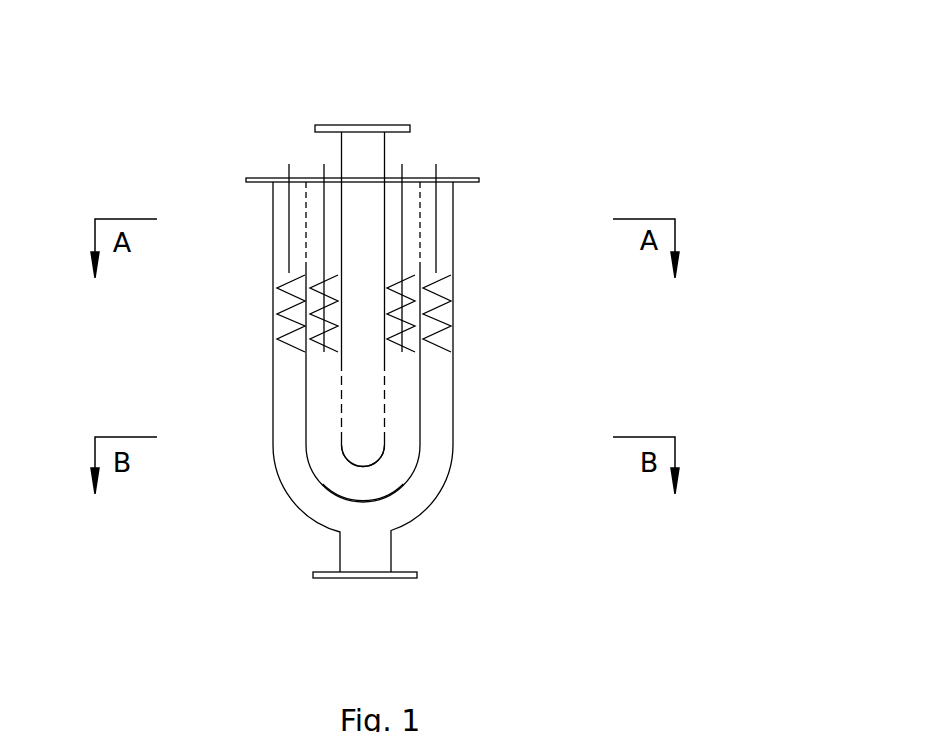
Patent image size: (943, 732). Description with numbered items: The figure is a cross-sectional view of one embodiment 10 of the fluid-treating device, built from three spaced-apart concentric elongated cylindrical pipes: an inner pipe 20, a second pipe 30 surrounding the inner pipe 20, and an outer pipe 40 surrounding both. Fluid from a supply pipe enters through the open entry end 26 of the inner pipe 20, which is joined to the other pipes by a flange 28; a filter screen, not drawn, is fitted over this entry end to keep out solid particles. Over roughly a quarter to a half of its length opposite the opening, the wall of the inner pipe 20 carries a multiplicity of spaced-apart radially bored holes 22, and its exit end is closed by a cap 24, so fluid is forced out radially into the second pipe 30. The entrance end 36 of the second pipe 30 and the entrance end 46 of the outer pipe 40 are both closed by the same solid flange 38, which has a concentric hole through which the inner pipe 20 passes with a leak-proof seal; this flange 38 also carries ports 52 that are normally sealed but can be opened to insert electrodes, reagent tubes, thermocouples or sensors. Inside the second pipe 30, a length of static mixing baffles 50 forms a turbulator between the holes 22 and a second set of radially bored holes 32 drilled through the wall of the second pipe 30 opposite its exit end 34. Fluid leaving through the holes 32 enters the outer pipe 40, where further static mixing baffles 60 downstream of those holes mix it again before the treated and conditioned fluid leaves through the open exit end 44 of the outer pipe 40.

The embodiment 10 is at (558, 85).
The inner pipe 20 is at (340, 147).
The holes 22 is at (341, 397).
The cap 24 is at (380, 458).
The entry end 26 is at (354, 125).
The flange 28 is at (393, 125).
The second pipe 30 is at (308, 435).
The holes 32 is at (307, 245).
The exit end 34 is at (395, 493).
The entrance end 36 is at (408, 195).
The flange 38 is at (476, 177).
The outer pipe 40 is at (455, 225).
The exit end 44 is at (333, 578).
The entrance end 46 is at (428, 200).
The static mixing baffles 50 is at (340, 358).
The ports 52 is at (323, 175).
The static mixing baffles 60 is at (282, 300).